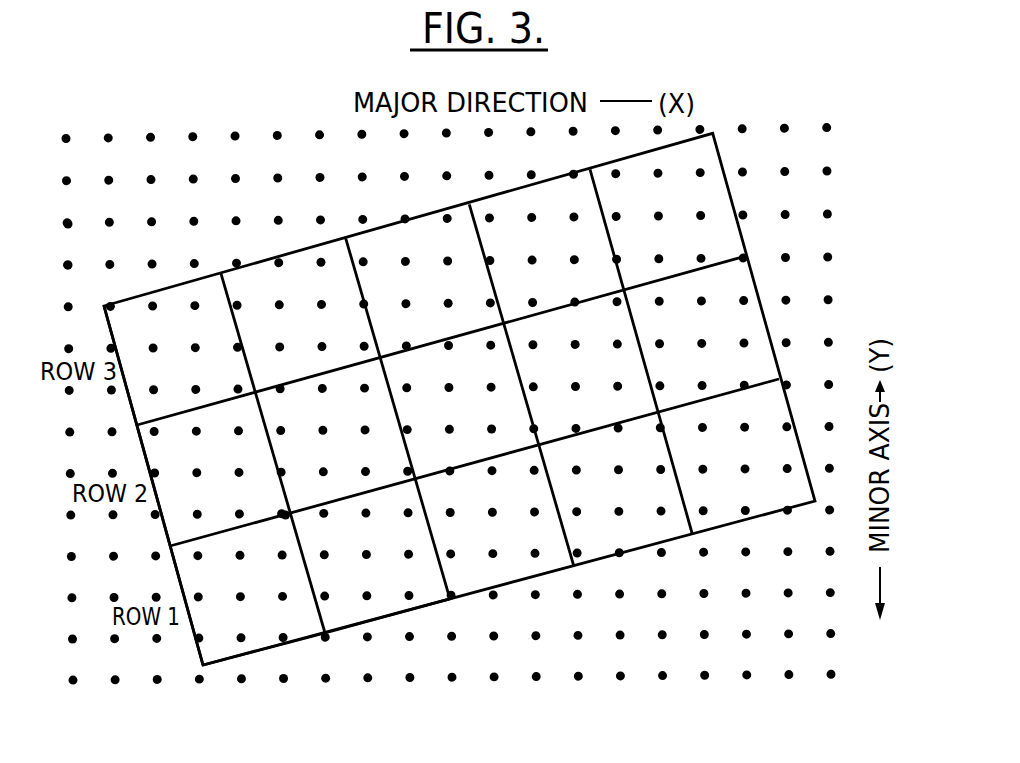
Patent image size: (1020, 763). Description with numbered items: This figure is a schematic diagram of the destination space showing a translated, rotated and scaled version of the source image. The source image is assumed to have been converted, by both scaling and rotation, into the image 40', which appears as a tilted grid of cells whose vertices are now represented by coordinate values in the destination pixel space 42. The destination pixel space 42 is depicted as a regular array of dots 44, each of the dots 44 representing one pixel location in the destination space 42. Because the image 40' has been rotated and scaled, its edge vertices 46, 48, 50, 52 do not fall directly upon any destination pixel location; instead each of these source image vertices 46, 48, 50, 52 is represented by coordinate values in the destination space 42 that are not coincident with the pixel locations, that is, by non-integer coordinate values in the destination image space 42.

The converted image 40' is at (459, 371).
The destination pixel space 42 is at (130, 135).
The dots 44 is at (68, 224).
The edge vertex 46 is at (134, 485).
The edge vertex 48 is at (291, 512).
The edge vertex 50 is at (203, 665).
The edge vertex 52 is at (325, 633).